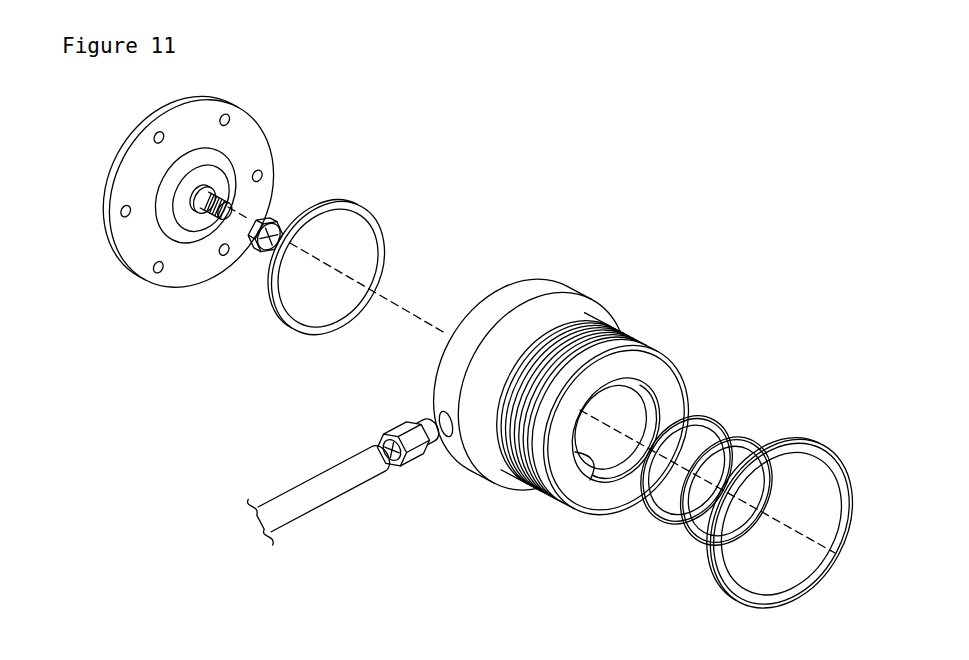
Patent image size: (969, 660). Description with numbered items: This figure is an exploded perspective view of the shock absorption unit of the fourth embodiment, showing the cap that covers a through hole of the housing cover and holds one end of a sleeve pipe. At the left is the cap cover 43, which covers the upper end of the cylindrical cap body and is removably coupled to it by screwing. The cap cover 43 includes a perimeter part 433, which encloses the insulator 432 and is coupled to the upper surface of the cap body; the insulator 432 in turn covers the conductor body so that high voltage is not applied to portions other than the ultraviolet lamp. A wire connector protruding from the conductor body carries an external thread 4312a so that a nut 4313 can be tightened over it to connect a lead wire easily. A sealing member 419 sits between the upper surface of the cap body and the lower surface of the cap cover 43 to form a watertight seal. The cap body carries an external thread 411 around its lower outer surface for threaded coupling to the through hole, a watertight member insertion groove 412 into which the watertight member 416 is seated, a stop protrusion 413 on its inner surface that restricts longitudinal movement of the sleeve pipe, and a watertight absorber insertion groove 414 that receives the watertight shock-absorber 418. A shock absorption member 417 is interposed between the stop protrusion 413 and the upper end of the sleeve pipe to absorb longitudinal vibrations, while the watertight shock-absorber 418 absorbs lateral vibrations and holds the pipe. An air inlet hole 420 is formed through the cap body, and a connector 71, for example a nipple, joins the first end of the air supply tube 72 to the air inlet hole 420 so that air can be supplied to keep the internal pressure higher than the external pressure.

The cap cover 43 is at (198, 201).
The perimeter part 433 is at (237, 147).
The insulator 432 is at (197, 197).
The external thread 4312a is at (208, 216).
The nut 4313 is at (280, 226).
The sealing member 419 is at (365, 225).
The external thread 411 is at (622, 322).
The watertight member insertion groove 412 is at (640, 345).
The watertight absorber insertion groove 414 is at (655, 410).
The stop protrusion 413 is at (585, 482).
The air inlet hole 420 is at (447, 437).
The shock absorption member 417 is at (707, 420).
The watertight shock-absorber 418 is at (738, 446).
The watertight member 416 is at (806, 452).
The connector 71 is at (405, 432).
The air supply tube 72 is at (333, 478).